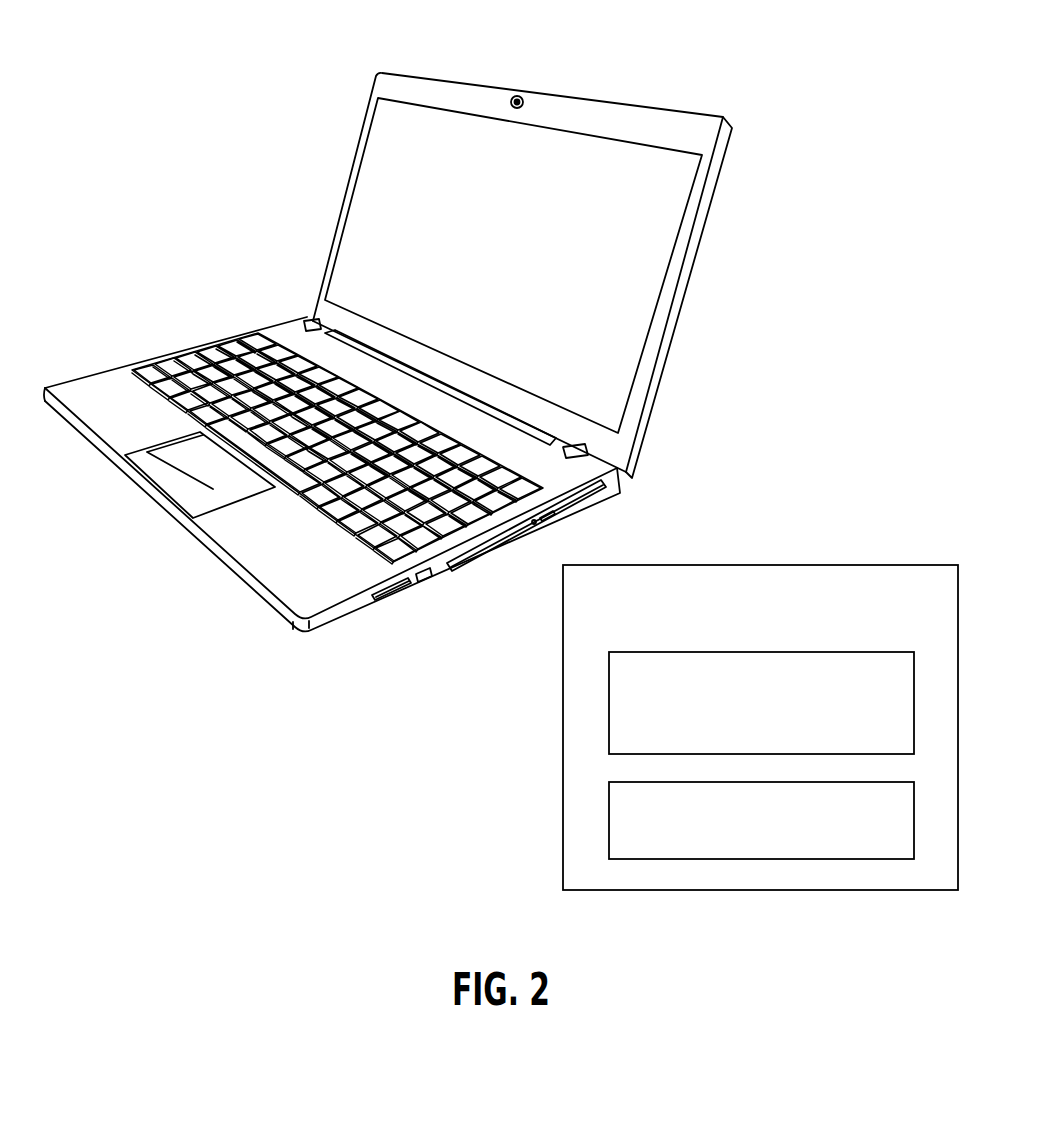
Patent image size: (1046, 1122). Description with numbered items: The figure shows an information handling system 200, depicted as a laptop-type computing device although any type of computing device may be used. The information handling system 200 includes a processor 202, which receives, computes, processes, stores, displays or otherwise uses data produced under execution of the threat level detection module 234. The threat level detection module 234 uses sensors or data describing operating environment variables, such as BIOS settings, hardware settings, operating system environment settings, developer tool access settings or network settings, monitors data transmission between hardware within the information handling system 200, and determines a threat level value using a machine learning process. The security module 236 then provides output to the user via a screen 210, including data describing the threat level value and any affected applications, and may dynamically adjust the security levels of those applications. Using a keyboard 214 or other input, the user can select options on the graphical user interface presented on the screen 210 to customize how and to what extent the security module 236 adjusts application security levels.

The information handling system 200 is at (157, 84).
The processor 202 is at (742, 633).
The screen 210 is at (368, 200).
The keyboard 214 is at (148, 371).
The threat level detection module 234 is at (742, 743).
The security module 236 is at (742, 846).